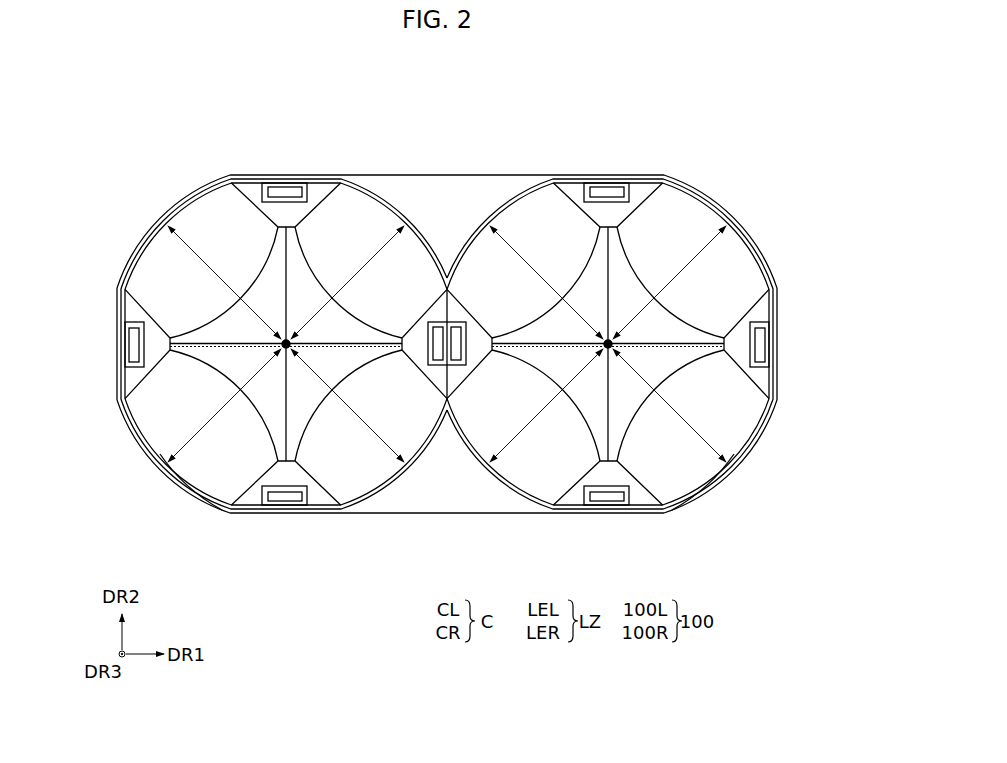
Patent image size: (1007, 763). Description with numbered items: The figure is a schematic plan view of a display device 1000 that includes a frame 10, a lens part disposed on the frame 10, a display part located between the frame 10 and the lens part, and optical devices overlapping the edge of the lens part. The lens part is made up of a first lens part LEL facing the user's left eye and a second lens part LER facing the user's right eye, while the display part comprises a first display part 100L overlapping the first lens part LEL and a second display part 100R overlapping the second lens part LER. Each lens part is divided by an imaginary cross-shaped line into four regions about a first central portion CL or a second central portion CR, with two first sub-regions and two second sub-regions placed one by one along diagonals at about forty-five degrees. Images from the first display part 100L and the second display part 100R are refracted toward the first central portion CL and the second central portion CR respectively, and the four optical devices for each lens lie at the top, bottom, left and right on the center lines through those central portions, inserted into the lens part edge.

The display device 1000 is at (723, 141).
The frame 10 is at (436, 175).
The first display part 100L is at (387, 190).
The second display part 100R is at (505, 190).
The first central portion CL is at (284, 352).
The second central portion CR is at (610, 352).
The first lens part LEL is at (193, 495).
The second lens part LER is at (702, 497).